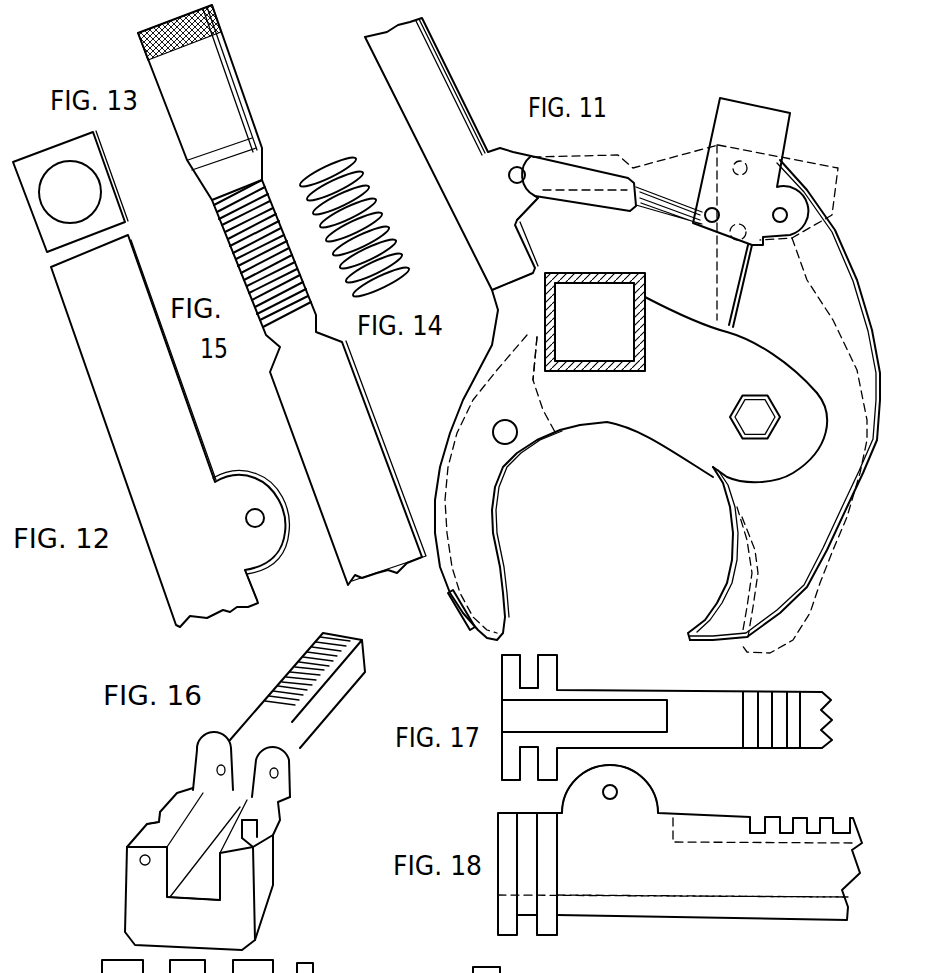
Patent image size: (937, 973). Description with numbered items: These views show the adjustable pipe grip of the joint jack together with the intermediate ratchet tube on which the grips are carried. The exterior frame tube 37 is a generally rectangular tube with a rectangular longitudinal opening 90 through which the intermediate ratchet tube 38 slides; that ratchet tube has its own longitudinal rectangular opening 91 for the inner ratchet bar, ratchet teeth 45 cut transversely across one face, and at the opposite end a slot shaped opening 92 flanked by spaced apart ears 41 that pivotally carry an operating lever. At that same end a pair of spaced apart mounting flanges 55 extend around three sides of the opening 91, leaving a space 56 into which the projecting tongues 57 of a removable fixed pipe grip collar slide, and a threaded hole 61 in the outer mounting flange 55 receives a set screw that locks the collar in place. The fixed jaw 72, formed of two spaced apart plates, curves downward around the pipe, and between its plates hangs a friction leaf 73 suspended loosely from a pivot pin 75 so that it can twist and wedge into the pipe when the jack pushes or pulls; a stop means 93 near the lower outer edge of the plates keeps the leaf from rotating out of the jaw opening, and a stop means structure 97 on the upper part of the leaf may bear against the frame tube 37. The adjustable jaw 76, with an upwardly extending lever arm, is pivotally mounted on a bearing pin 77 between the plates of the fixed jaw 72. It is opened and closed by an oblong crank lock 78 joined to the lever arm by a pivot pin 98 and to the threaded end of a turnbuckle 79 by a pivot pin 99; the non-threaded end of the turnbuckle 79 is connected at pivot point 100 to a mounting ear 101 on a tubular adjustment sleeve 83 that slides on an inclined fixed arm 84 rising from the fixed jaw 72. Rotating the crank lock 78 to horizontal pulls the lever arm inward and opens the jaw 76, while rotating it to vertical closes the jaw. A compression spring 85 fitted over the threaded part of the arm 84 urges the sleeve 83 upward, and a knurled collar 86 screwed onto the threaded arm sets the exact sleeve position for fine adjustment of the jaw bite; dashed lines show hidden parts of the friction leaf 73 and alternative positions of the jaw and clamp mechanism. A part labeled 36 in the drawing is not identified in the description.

In FIG. 11, the jaw arm junction 36 is at (708, 468).
In FIG. 11, the exterior frame tube 37 is at (597, 272).
In FIG. 17, the intermediate ratchet tube 38 is at (665, 682).
In FIG. 18, the intermediate ratchet tube 38 is at (693, 815).
In FIG. 16, the intermediate ratchet tube 38 is at (290, 800).
In FIG. 18, the ears 41 is at (640, 792).
In FIG. 16, the ears 41 is at (192, 767).
In FIG. 17, the ratchet teeth 45 is at (763, 692).
In FIG. 18, the ratchet teeth 45 is at (777, 813).
In FIG. 16, the ratchet teeth 45 is at (283, 673).
In FIG. 17, the mounting flanges 55 is at (515, 653).
In FIG. 18, the mounting flanges 55 is at (550, 942).
In FIG. 16, the mounting flanges 55 is at (127, 837).
In FIG. 17, the space 56 is at (533, 653).
In FIG. 16, the space 56 is at (155, 813).
In FIG. 16, the projecting tongues 57 is at (300, 948).
In FIG. 16, the threaded hole 61 is at (145, 867).
In FIG. 11, the fixed jaw 72 is at (443, 430).
In FIG. 11, the friction leaf 73 is at (505, 553).
In FIG. 11, the pivot pin 75 is at (507, 422).
In FIG. 11, the adjustable jaw 76 is at (880, 187).
In FIG. 11, the bearing pin 77 is at (730, 410).
In FIG. 11, the crank lock 78 is at (797, 137).
In FIG. 11, the turnbuckle 79 is at (593, 212).
In FIG. 13, the tubular adjustment sleeve 83 is at (167, 160).
In FIG. 12, the tubular adjustment sleeve 83 is at (80, 380).
In FIG. 11, the tubular adjustment sleeve 83 is at (392, 107).
In FIG. 15, the fixed arm 84 is at (267, 368).
In FIG. 11, the fixed arm 84 is at (492, 293).
In FIG. 14, the compression spring 85 is at (375, 226).
In FIG. 15, the knurled collar 86 is at (257, 115).
In FIG. 11, the rectangular longitudinal opening 90 is at (575, 297).
In FIG. 18, the longitudinal rectangular opening 91 is at (722, 893).
In FIG. 16, the longitudinal rectangular opening 91 is at (205, 880).
In FIG. 17, the slot shaped opening 92 is at (667, 725).
In FIG. 11, the stop means 93 is at (462, 618).
In FIG. 11, the stop means structure 97 is at (528, 335).
In FIG. 11, the pivot pin 98 is at (780, 223).
In FIG. 11, the pivot pin 99 is at (712, 220).
In FIG. 11, the pivot point 100 is at (520, 168).
In FIG. 12, the mounting ear 101 is at (260, 573).
In FIG. 11, the mounting ear 101 is at (533, 215).